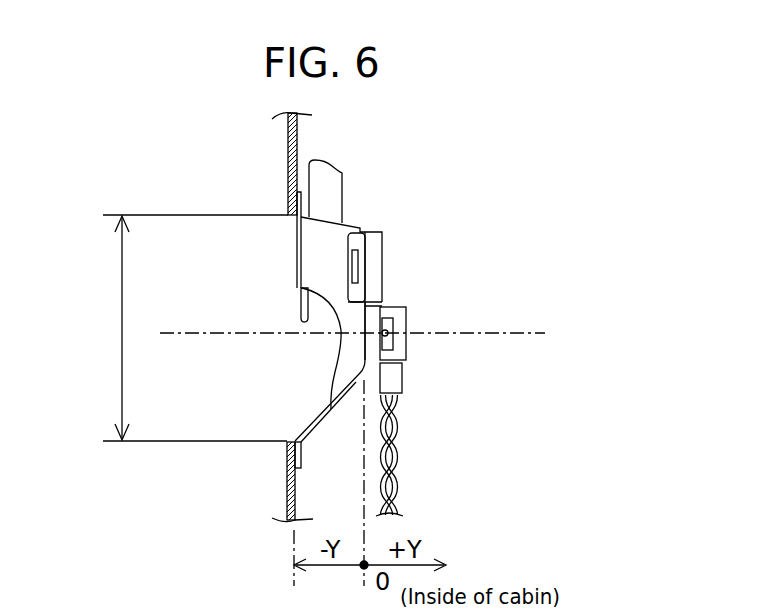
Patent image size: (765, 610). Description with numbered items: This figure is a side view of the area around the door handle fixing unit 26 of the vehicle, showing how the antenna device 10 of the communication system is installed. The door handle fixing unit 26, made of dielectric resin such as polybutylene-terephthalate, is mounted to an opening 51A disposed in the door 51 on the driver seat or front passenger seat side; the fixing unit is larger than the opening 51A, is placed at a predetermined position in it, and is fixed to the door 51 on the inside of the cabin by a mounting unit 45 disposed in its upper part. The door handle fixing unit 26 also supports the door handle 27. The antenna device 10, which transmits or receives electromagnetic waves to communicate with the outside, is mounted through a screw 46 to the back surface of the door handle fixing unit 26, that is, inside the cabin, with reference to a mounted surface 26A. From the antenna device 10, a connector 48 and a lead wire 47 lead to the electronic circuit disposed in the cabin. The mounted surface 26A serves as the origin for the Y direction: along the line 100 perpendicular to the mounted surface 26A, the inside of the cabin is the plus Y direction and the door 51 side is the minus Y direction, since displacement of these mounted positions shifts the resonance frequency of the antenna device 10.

The antenna device 10 is at (392, 312).
The door handle fixing unit 26 is at (343, 352).
The mounted surface 26A is at (273, 443).
The door handle 27 is at (300, 303).
The mounting unit 45 is at (317, 179).
The screw 46 is at (388, 333).
The lead wire 47 is at (400, 423).
The connector 48 is at (397, 378).
The door 51 is at (288, 138).
The opening 51A is at (175, 328).
The line 100 is at (523, 332).